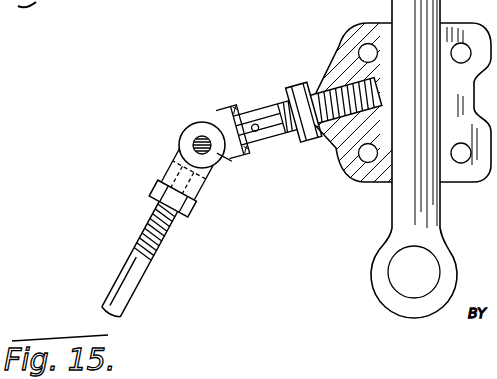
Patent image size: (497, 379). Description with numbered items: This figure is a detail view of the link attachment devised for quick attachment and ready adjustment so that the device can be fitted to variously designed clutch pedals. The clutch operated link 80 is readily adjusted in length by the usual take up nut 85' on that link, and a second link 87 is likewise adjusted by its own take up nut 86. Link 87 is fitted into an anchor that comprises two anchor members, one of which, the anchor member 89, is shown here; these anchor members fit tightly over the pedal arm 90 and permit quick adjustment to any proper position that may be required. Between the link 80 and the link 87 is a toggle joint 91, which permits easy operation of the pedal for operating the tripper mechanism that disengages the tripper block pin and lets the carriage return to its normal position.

The clutch operated link 80 is at (130, 277).
The take up nut 85' is at (181, 207).
The take up nut 86 is at (318, 127).
The link 87 is at (282, 136).
The anchor member 89 is at (365, 183).
The pedal arm 90 is at (431, 159).
The toggle joint 91 is at (218, 166).